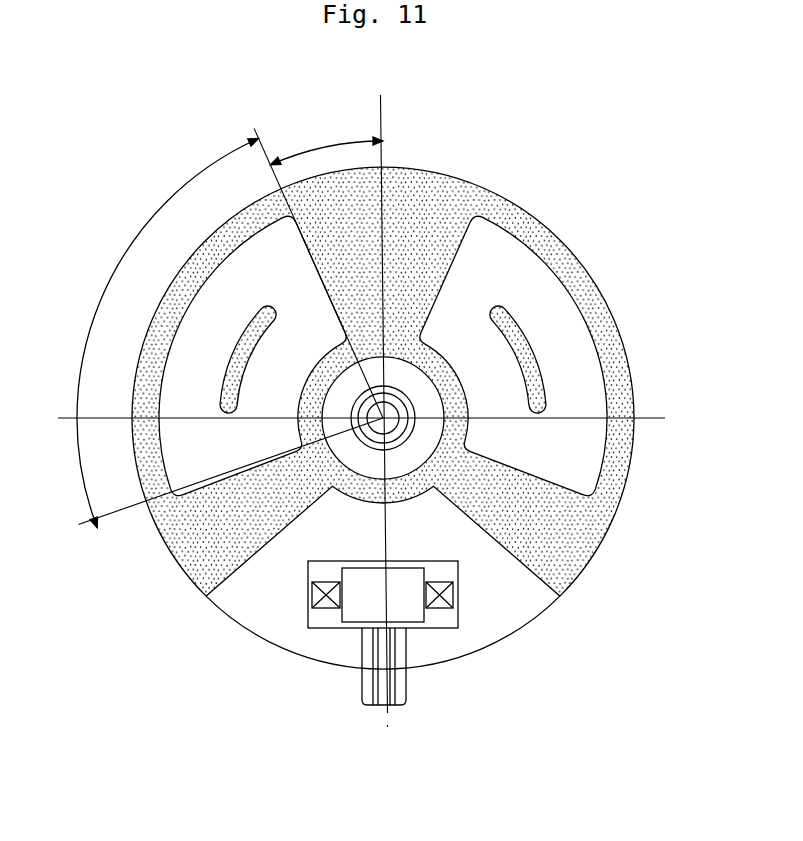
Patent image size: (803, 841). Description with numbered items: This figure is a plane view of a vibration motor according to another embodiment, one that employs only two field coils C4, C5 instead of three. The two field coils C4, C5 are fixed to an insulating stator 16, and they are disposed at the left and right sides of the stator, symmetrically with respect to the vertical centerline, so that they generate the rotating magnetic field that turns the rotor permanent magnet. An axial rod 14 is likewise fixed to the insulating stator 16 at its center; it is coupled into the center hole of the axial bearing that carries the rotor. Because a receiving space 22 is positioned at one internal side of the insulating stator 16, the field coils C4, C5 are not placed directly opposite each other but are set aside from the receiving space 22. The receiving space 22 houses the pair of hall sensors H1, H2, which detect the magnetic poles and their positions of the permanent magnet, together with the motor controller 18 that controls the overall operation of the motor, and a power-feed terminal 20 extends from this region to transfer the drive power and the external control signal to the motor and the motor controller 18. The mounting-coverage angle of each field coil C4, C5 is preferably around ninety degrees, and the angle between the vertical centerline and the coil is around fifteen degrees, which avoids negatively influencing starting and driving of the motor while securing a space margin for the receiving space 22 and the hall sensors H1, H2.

The axial rod 14 is at (389, 426).
The insulating stator 16 is at (592, 538).
The motor 18 is at (361, 598).
The power-feed terminal 20 is at (397, 690).
The receiving space 22 is at (240, 604).
The field coil C4 is at (192, 335).
The field coil C5 is at (598, 452).
The hall sensor H1 is at (308, 605).
The hall sensor H2 is at (455, 600).